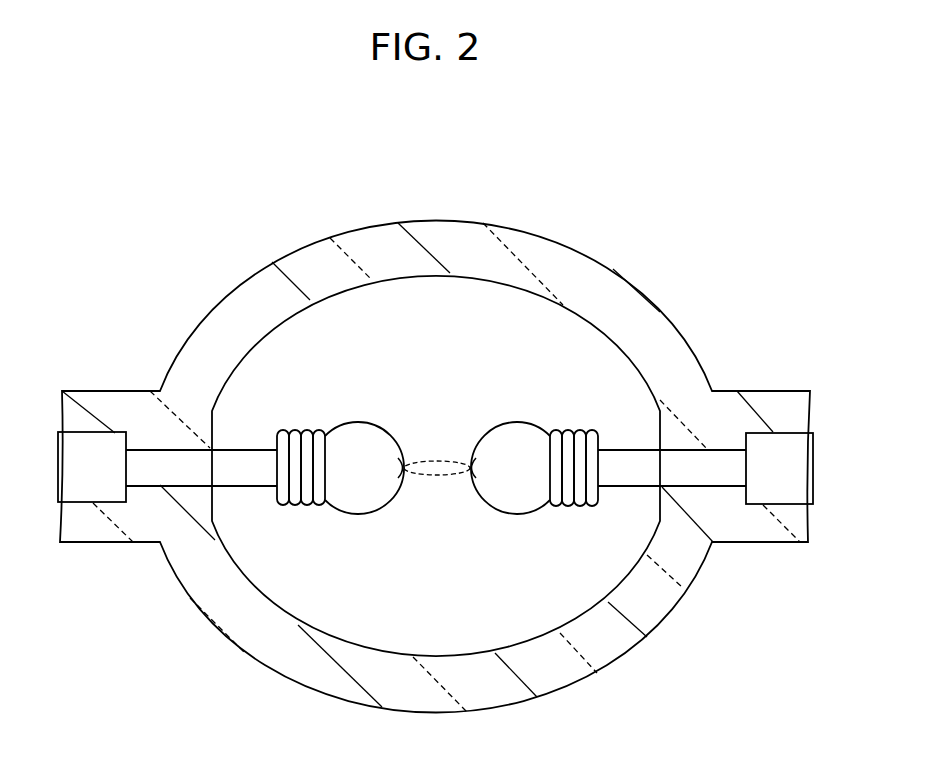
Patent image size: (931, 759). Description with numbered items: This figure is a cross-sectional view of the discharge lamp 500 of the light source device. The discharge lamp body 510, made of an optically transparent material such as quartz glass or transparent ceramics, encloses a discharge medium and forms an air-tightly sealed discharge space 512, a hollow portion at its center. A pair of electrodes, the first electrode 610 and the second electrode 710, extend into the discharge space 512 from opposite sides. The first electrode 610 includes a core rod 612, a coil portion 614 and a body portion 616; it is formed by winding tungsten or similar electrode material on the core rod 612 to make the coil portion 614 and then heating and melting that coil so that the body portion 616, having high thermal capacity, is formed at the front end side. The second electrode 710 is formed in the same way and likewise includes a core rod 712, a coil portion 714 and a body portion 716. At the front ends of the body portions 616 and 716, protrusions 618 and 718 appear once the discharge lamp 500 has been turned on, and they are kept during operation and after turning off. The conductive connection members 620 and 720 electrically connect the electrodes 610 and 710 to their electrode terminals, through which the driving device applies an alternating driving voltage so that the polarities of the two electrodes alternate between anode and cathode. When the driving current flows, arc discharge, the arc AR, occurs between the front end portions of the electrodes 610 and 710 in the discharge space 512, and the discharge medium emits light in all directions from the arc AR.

The discharge lamp 500 is at (575, 174).
The discharge lamp body 510 is at (288, 262).
The discharge space 512 is at (428, 302).
The first electrode 610 is at (337, 522).
The core rod 612 is at (147, 480).
The coil portion 614 is at (325, 512).
The body portion 616 is at (383, 488).
The protrusion 618 is at (403, 458).
The connection member 620 is at (110, 438).
The second electrode 710 is at (537, 522).
The core rod 712 is at (730, 480).
The coil portion 714 is at (598, 512).
The body portion 716 is at (490, 488).
The protrusion 718 is at (468, 458).
The connection member 720 is at (761, 440).
The arc AR is at (444, 458).